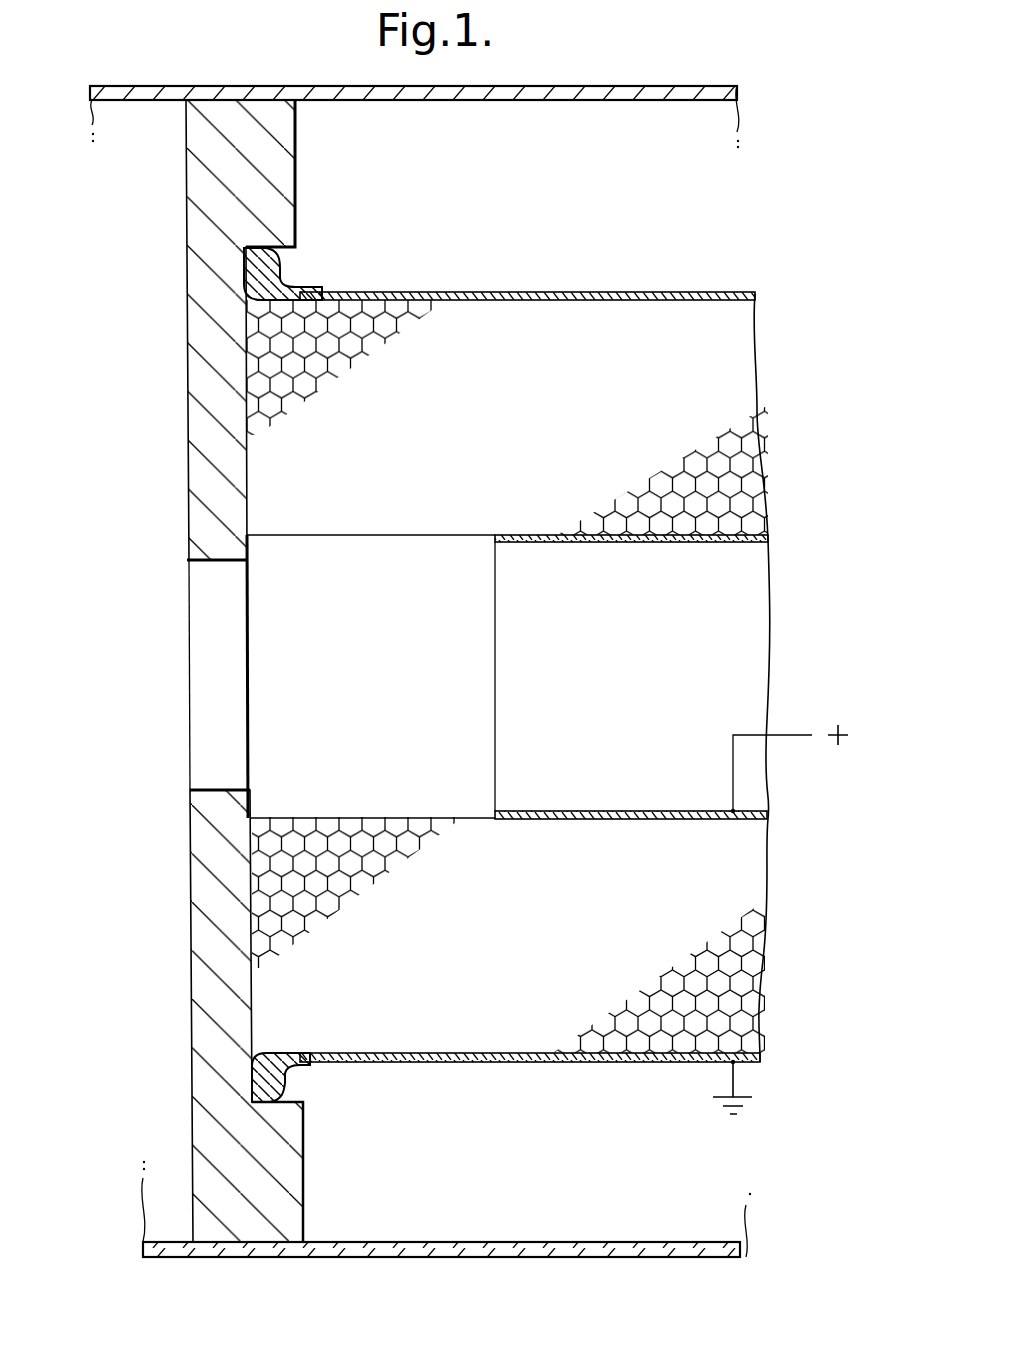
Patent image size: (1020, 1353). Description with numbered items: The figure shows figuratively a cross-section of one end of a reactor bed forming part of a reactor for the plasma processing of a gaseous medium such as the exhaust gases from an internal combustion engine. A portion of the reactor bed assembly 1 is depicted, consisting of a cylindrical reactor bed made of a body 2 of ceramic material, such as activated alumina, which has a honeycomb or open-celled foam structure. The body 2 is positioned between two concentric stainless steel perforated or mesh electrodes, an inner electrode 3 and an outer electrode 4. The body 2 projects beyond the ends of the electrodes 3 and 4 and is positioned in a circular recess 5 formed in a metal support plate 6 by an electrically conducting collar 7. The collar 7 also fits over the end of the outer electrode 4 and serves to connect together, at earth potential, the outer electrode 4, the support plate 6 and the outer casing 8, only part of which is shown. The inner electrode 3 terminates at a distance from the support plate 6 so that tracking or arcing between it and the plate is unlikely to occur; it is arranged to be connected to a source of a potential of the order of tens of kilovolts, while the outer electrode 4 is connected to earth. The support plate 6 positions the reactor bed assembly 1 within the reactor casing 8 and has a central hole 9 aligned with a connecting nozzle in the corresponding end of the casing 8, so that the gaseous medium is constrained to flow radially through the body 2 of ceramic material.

The reactor bed assembly 1 is at (634, 284).
The body of ceramic material 2 is at (338, 326).
The inner electrode 3 is at (578, 544).
The outer electrode 4 is at (517, 1063).
The circular recess 5 is at (255, 800).
The metal support plate 6 is at (203, 1122).
The electrically conducting collar 7 is at (297, 1063).
The outer casing 8 is at (635, 88).
The central hole 9 is at (192, 598).